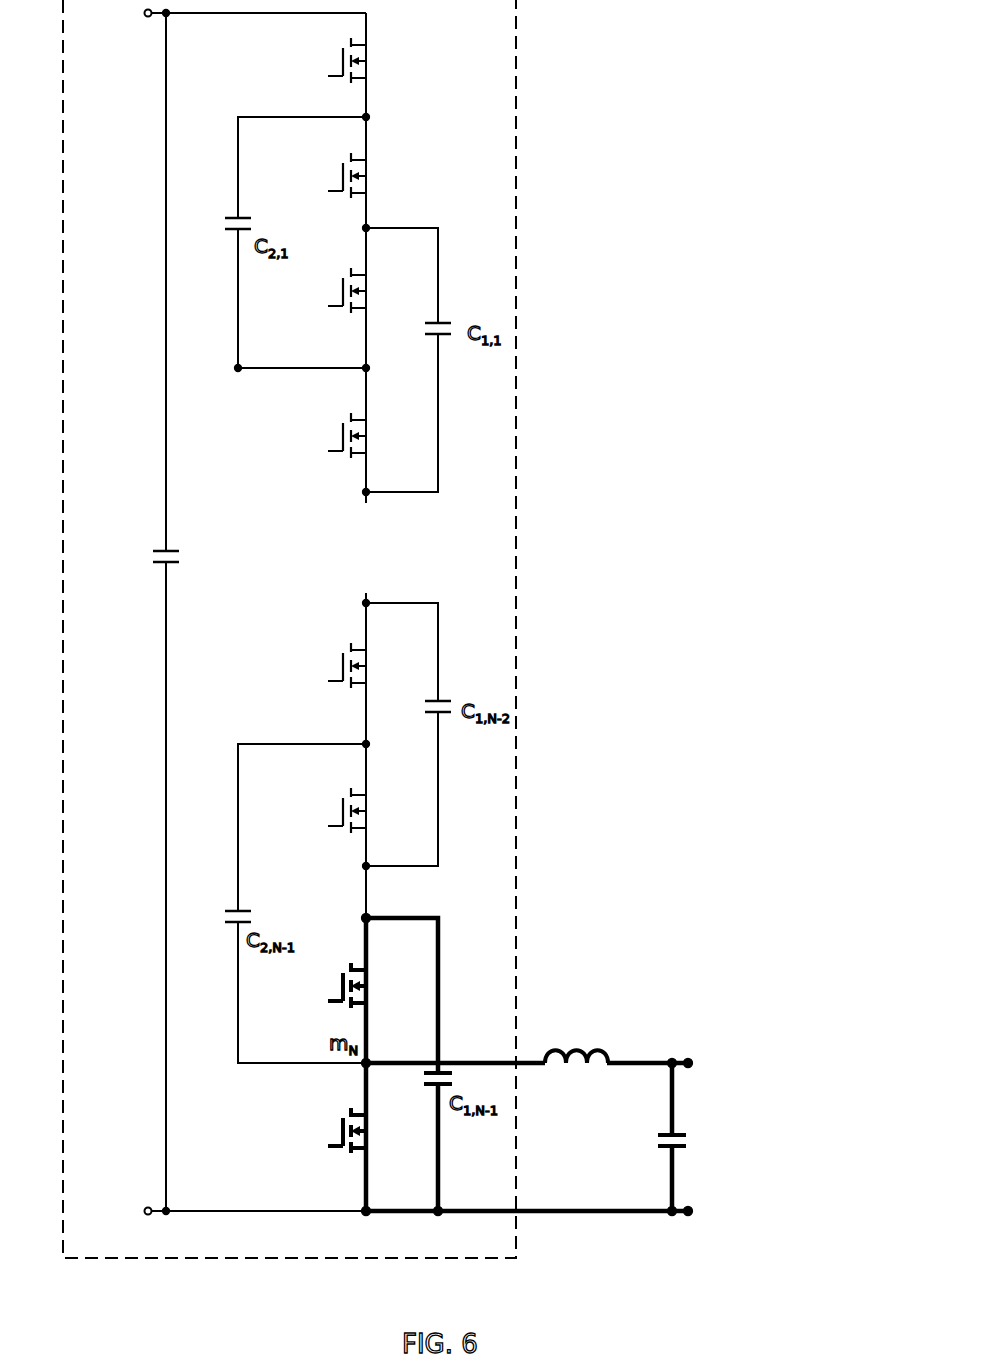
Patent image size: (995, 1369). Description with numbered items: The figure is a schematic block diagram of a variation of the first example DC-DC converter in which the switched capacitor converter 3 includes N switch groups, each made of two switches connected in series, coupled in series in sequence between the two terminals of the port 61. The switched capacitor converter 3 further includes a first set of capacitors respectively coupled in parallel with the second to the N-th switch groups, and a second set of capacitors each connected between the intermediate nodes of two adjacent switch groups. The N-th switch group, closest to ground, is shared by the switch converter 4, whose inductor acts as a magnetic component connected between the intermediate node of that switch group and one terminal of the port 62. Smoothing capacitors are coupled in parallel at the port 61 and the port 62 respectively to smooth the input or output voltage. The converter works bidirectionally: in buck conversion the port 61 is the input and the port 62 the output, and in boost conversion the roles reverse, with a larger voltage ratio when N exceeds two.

The switched capacitor converter 3 is at (524, 289).
The port 61 is at (136, 402).
The switch converter 4 is at (662, 1006).
The port 62 is at (716, 1129).